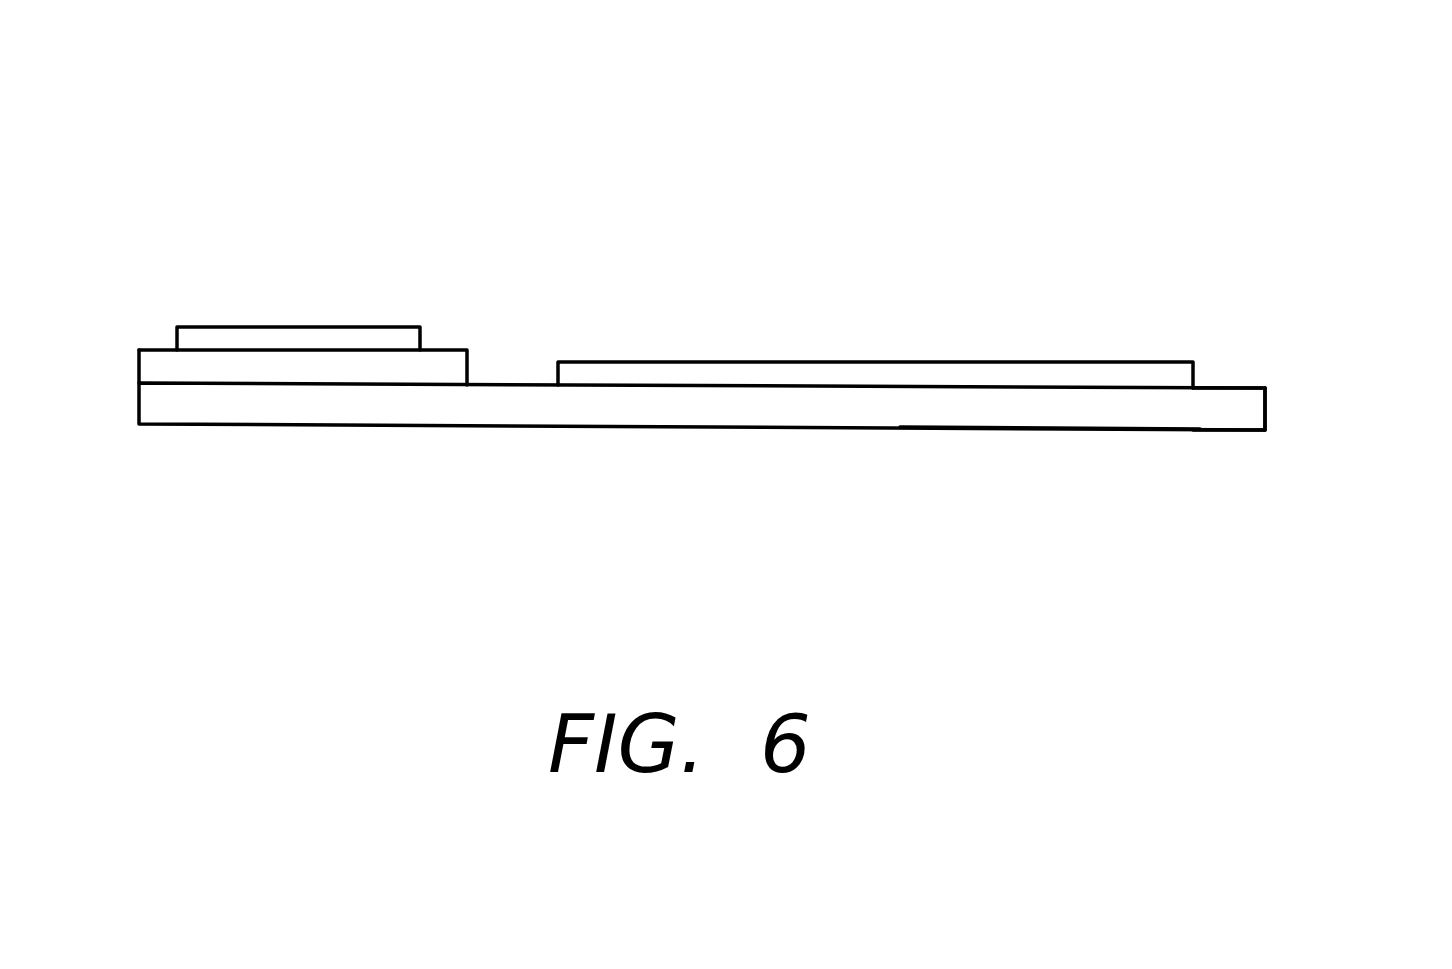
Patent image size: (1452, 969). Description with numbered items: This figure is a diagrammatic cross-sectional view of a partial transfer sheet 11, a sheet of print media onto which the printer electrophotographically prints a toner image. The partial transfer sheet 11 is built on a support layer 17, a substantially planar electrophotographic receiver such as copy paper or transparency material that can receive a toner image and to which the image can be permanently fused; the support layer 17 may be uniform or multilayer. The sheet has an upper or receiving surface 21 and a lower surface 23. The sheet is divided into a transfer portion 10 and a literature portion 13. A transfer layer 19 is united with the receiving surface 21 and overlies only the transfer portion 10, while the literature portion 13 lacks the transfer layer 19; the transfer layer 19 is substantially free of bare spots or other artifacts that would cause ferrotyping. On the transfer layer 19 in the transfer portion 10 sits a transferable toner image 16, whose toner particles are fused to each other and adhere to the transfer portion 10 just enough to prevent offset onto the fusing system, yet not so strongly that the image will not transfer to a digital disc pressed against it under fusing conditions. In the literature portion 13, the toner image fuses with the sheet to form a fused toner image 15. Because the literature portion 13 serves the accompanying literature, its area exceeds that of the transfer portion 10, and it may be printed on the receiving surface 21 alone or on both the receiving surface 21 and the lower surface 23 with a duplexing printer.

The transfer portion 10 is at (370, 442).
The partial transfer sheet 11 is at (770, 200).
The literature portion 13 is at (1040, 435).
The fused toner image 15 is at (992, 360).
The transferable toner image 16 is at (331, 327).
The support layer 17 is at (1266, 408).
The transfer layer 19 is at (470, 353).
The receiving surface 21 is at (1243, 388).
The lower surface 23 is at (1220, 431).